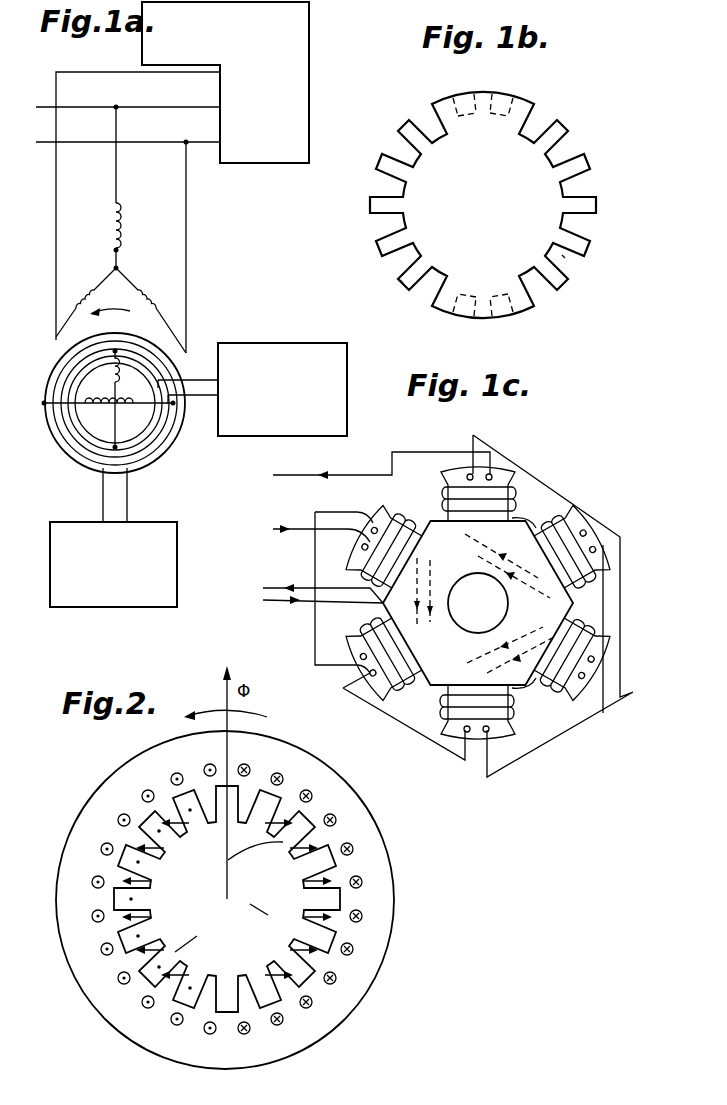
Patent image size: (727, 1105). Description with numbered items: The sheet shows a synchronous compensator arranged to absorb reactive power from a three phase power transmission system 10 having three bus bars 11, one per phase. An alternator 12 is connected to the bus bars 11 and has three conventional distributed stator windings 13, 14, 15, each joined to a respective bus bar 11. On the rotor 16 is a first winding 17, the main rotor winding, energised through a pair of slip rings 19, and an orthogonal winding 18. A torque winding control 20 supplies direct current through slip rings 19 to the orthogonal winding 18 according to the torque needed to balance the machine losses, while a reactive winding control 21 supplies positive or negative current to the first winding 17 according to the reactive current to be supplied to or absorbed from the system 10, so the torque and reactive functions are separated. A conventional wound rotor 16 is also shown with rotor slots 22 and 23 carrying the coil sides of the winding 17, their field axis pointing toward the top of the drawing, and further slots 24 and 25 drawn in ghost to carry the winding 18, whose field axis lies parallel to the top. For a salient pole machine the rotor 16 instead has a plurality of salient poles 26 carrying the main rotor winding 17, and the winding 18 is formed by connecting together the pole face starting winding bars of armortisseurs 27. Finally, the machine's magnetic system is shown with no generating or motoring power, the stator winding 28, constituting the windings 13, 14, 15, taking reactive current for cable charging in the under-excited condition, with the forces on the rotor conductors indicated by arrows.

In FIG. 1A, the three phase power transmission system 10 is at (296, 60).
In FIG. 1A, the bus bars 11 is at (92, 70).
In FIG. 1A, the alternator 12 is at (197, 340).
In FIG. 2, the alternator 12 is at (366, 845).
In FIG. 1A, the stator winding 13 is at (81, 298).
In FIG. 1A, the stator winding 14 is at (121, 226).
In FIG. 1A, the stator winding 15 is at (144, 297).
In FIG. 1A, the rotor 16 is at (133, 428).
In FIG. 1B, the rotor 16 is at (525, 176).
In FIG. 1C, the rotor 16 is at (552, 615).
In FIG. 2, the rotor 16 is at (213, 833).
In FIG. 1A, the first winding 17 is at (120, 360).
In FIG. 1C, the first winding 17 is at (272, 598).
In FIG. 2, the first winding 17 is at (283, 986).
In FIG. 1A, the orthogonal winding 18 is at (128, 409).
In FIG. 1C, the orthogonal winding 18 is at (297, 527).
In FIG. 1A, the slip rings 19 is at (76, 437).
In FIG. 1A, the torque winding control 20 is at (128, 534).
In FIG. 1A, the reactive winding control 21 is at (263, 350).
In FIG. 1B, the rotor slot 22 is at (362, 250).
In FIG. 1B, the rotor slot 23 is at (566, 260).
In FIG. 1B, the further slot 24 is at (512, 86).
In FIG. 1B, the further slot 25 is at (503, 326).
In FIG. 1C, the salient poles 26 is at (500, 478).
In FIG. 1C, the armortisseurs 27 is at (406, 548).
In FIG. 2, the stator winding 28 is at (313, 797).